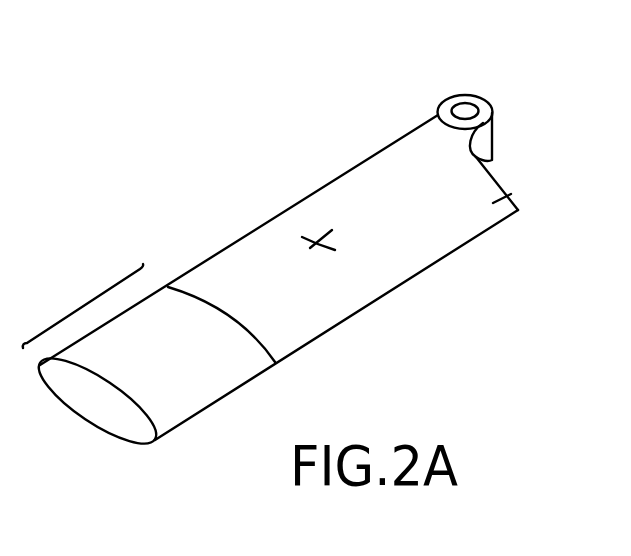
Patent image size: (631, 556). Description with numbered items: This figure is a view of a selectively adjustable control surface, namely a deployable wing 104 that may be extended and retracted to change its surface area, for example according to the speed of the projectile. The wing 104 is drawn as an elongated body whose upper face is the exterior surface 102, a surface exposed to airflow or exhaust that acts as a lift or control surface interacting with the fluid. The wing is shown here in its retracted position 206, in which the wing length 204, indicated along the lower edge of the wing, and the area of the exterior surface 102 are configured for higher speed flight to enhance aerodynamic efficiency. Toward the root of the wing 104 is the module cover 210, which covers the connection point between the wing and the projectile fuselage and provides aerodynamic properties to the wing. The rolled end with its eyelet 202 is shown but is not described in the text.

The exterior surface 102 is at (122, 355).
The deployable wing 104 is at (508, 213).
The eyelet 202 is at (463, 108).
The wing length 204 is at (88, 295).
The retracted position 206 is at (75, 443).
The module cover 210 is at (318, 240).